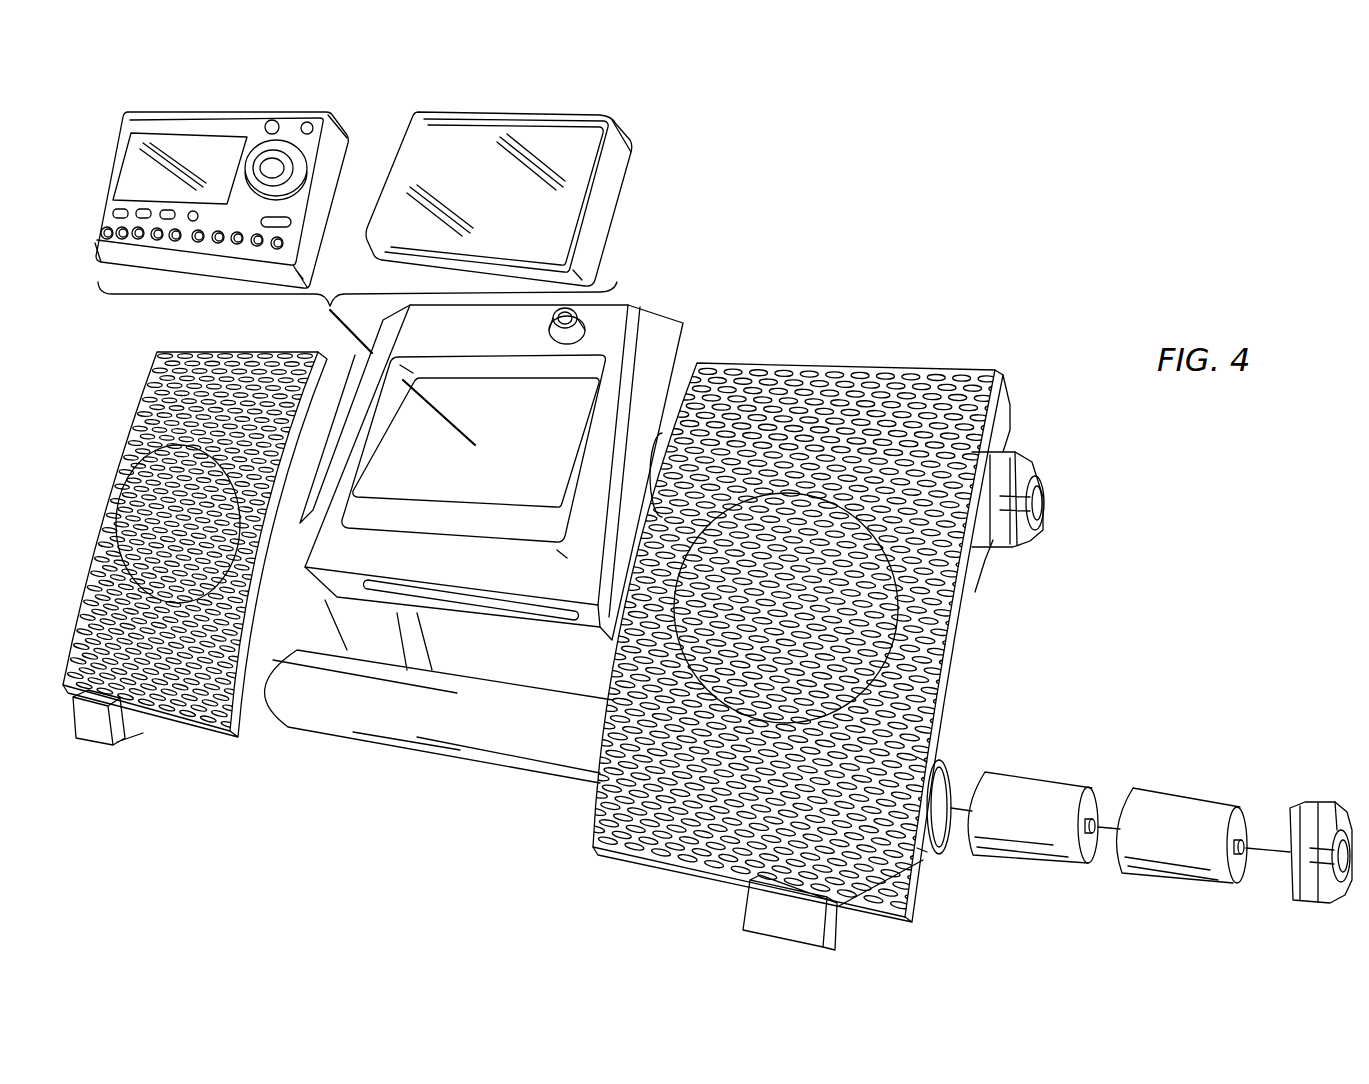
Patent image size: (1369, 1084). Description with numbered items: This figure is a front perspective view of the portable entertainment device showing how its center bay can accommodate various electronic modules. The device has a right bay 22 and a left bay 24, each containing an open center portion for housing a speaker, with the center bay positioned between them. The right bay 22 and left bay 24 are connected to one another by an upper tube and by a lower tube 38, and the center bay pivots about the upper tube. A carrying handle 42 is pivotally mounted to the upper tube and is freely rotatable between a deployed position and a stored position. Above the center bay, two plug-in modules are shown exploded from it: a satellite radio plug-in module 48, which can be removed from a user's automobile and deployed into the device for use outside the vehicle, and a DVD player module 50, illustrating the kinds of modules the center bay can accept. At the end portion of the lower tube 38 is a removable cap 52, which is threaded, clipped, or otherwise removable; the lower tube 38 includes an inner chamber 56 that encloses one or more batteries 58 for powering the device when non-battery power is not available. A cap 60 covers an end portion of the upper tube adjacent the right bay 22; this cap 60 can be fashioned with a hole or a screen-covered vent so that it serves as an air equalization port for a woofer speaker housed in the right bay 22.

The right bay 22 is at (963, 370).
The left bay 24 is at (123, 428).
The lower tube 38 is at (393, 712).
The carrying handle 42 is at (432, 642).
The satellite radio plug-in module 48 is at (115, 160).
The DVD player module 50 is at (608, 178).
The removable cap 52 is at (1333, 797).
The inner chamber 56 is at (941, 786).
The batteries 58 is at (1255, 793).
The cap 60 is at (1050, 497).